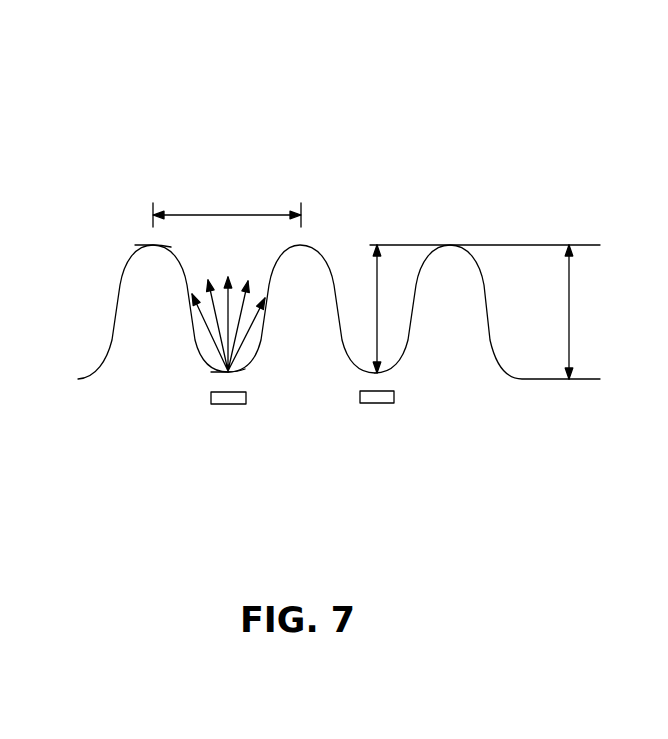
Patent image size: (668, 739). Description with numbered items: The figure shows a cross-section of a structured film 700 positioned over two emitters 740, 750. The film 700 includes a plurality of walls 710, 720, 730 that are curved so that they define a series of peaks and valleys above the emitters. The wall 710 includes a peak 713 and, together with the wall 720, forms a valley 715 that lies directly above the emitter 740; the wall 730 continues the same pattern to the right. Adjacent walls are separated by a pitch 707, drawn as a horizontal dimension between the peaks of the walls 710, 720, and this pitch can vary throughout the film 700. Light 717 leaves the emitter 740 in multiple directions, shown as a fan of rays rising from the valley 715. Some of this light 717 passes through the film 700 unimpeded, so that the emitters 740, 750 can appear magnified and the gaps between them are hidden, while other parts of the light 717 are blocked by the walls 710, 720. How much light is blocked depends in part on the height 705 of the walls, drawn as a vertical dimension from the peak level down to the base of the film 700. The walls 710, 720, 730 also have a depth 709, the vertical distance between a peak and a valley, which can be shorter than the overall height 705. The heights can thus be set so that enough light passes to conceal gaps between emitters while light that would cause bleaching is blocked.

The structured film 700 is at (352, 148).
The height 705 is at (569, 307).
The pitch 707 is at (257, 215).
The depth 709 is at (375, 305).
The wall 710 is at (172, 338).
The peak 713 is at (153, 243).
The valley 715 is at (210, 368).
The light 717 is at (233, 263).
The wall 720 is at (322, 338).
The wall 730 is at (472, 338).
The emitter 740 is at (229, 408).
The emitter 750 is at (376, 407).